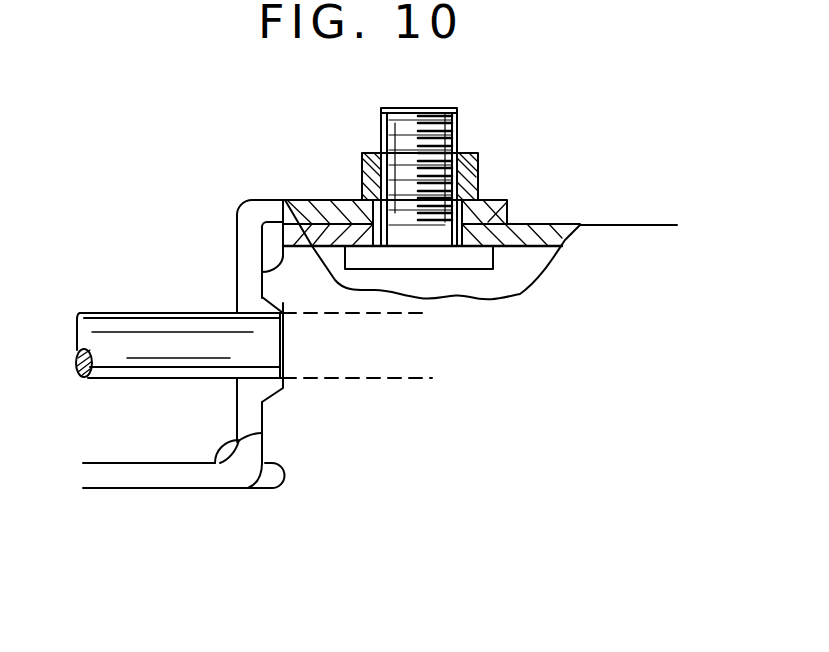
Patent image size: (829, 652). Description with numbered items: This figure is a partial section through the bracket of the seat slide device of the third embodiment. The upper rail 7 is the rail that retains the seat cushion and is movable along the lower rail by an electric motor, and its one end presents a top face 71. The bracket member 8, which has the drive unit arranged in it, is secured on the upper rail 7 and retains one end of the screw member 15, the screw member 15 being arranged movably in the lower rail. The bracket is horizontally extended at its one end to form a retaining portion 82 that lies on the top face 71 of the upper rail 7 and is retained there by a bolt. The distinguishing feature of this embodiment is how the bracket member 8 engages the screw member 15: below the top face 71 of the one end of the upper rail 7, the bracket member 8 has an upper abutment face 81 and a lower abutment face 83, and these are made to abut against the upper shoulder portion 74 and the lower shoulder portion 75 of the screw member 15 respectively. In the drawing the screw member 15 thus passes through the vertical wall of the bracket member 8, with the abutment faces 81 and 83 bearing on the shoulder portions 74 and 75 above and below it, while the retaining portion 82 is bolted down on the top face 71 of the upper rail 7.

The upper rail 7 is at (643, 247).
The top face 71 is at (540, 233).
The retaining portion 82 is at (322, 207).
The upper shoulder portion 74 is at (265, 292).
The abutment face 81 is at (250, 302).
The abutment face 83 is at (247, 417).
The screw member 15 is at (147, 348).
The lower shoulder portion 75 is at (215, 465).
The bracket member 8 is at (137, 525).